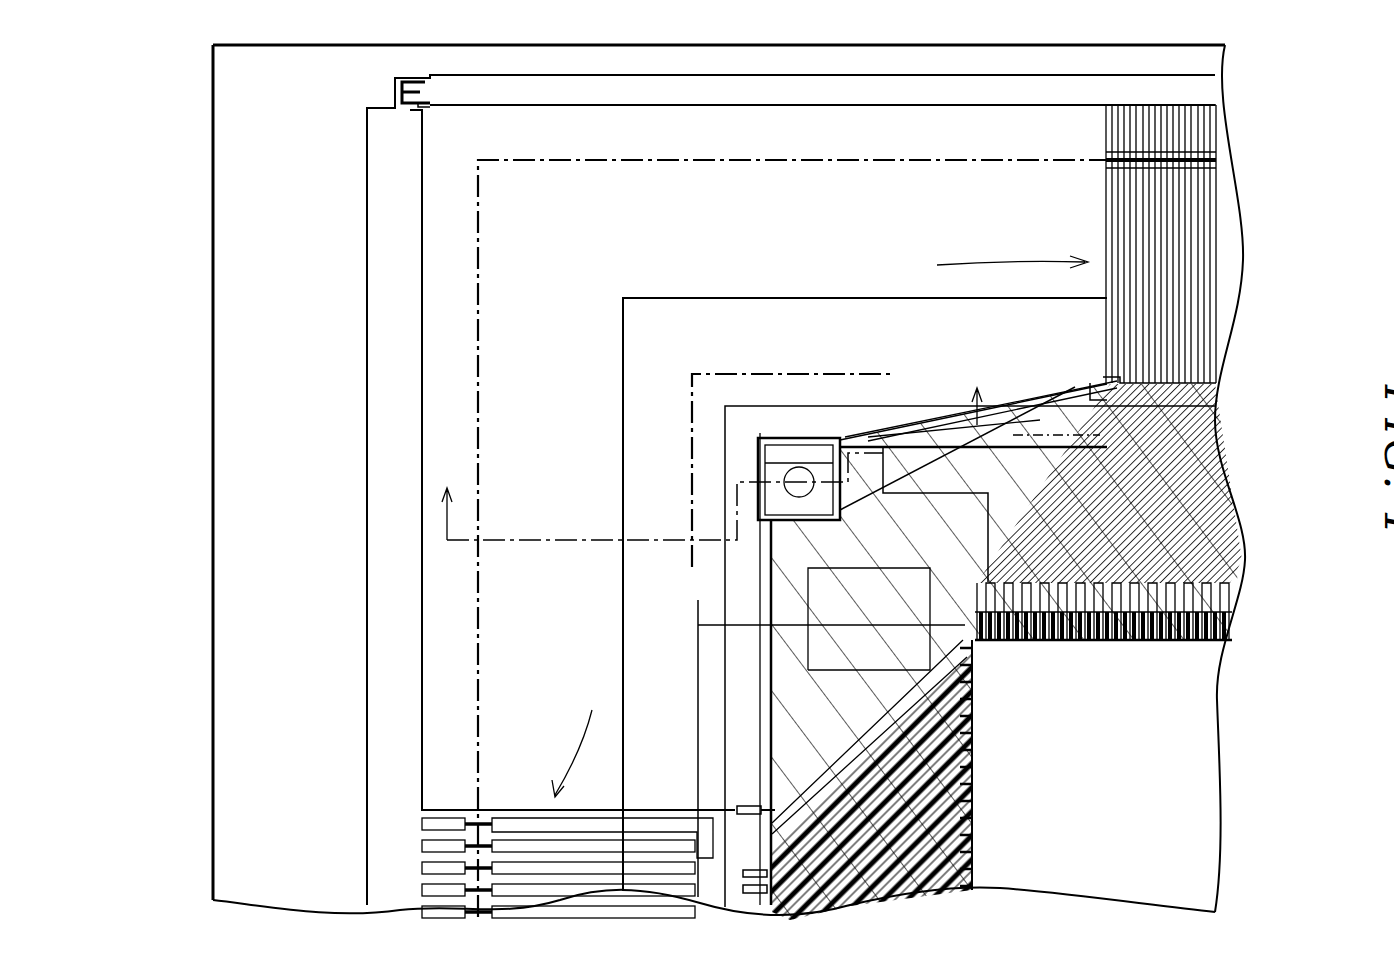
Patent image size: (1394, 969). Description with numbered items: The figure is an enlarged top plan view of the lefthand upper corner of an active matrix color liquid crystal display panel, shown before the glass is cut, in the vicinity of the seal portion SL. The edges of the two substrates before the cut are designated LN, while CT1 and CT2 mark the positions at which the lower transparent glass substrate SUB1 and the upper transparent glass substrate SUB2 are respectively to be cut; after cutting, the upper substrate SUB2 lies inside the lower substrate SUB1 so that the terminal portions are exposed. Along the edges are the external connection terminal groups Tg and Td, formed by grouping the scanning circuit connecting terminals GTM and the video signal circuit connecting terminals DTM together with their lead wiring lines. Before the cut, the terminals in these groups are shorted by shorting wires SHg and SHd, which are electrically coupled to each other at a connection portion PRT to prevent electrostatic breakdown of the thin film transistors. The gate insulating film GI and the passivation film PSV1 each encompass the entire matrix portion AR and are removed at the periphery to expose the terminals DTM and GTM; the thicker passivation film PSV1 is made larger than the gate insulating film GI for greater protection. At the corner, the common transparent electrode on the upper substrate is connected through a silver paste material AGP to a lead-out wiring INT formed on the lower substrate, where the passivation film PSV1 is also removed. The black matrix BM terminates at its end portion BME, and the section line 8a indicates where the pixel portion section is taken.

The edges of the two substrates before the cut LN is at (213, 558).
The lower transparent glass substrate SUB1 is at (213, 370).
The upper transparent glass substrate SUB2 is at (213, 420).
The connection portion PRT is at (395, 90).
The shorting wire SHg is at (380, 494).
The shorting wire SHd is at (750, 96).
The cut position of substrate SUB1 CT1 is at (478, 270).
The cut position of substrate SUB2 CT2 is at (730, 374).
The video signal circuit connecting terminal DTM is at (1145, 218).
The passivation film PSV1 is at (793, 445).
The gate insulating film GI is at (698, 657).
The section line 8a— 8a is at (718, 452).
The black matrix BM is at (870, 440).
The seal member SL is at (768, 607).
The silver paste material AGP is at (790, 457).
The lead-out wiring INT is at (1040, 400).
The end portion of the black matrix BME is at (1062, 400).
The matrix portion AR is at (944, 780).
The scanning circuit connecting terminal GTM is at (535, 870).
The external connection terminal group Tg is at (612, 700).